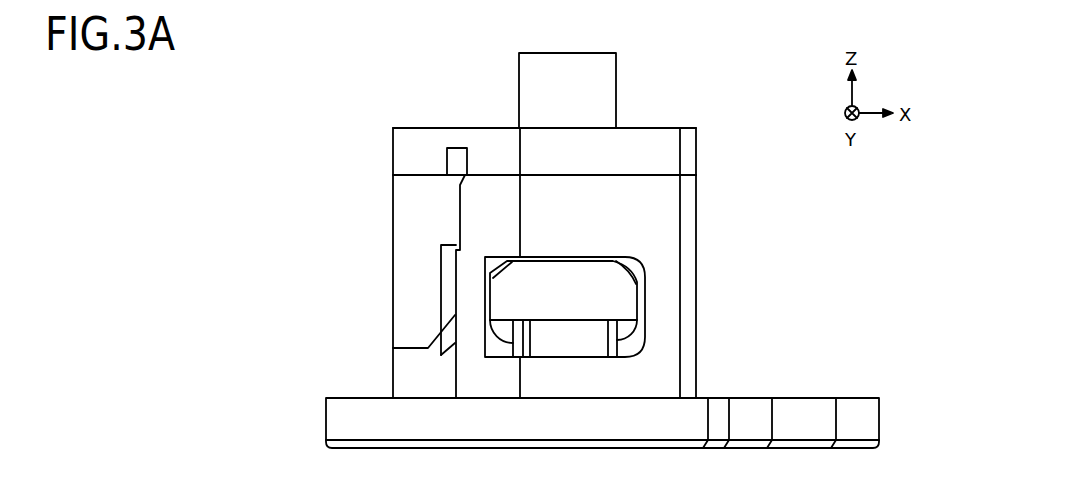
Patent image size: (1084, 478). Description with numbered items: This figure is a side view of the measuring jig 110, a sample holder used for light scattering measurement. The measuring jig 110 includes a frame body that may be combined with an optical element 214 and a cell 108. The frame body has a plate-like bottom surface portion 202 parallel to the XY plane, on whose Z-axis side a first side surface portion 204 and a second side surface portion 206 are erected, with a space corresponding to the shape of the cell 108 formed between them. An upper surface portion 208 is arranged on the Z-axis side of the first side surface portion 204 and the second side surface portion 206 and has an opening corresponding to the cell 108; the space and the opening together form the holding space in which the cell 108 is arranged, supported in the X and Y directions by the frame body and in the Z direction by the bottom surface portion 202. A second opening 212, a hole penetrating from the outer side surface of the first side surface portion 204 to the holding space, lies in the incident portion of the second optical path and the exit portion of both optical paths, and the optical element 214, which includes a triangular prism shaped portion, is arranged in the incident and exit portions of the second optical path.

The measuring jig 110 is at (410, 102).
The cell 108 is at (584, 53).
The upper surface portion 208 is at (683, 127).
The first side surface portion 204 is at (696, 208).
The second side surface portion 206 is at (393, 219).
The optical element 214 is at (636, 283).
The second opening 212 is at (633, 331).
The bottom surface portion 202 is at (879, 421).